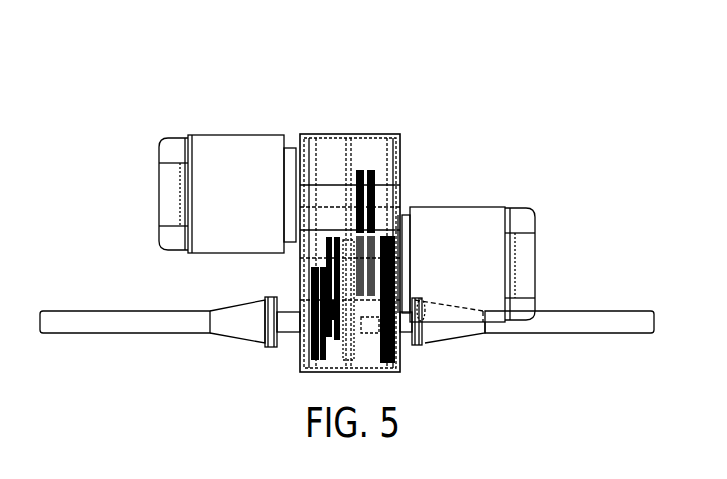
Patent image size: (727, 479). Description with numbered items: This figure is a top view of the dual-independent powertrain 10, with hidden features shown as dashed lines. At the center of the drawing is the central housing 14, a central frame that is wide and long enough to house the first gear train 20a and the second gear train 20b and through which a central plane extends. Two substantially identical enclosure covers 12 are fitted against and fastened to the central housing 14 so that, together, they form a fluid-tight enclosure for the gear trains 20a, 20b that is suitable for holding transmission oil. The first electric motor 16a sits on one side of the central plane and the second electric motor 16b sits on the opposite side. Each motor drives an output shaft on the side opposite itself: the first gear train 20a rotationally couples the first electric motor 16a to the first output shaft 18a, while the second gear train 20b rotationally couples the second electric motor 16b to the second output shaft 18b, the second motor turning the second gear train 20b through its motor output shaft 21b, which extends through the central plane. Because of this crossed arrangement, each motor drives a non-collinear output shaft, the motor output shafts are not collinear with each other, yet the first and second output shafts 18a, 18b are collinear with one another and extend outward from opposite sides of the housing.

The dual-independent powertrain 10 is at (112, 102).
The enclosure cover 12 is at (297, 145).
The central housing 14 is at (337, 133).
The first electric motor 16a is at (518, 207).
The second electric motor 16b is at (158, 208).
The first output shaft 18a is at (160, 311).
The second output shaft 18b is at (568, 309).
The first gear train 20a is at (306, 257).
The second gear train 20b is at (378, 216).
The second motor output shaft 21b is at (325, 185).